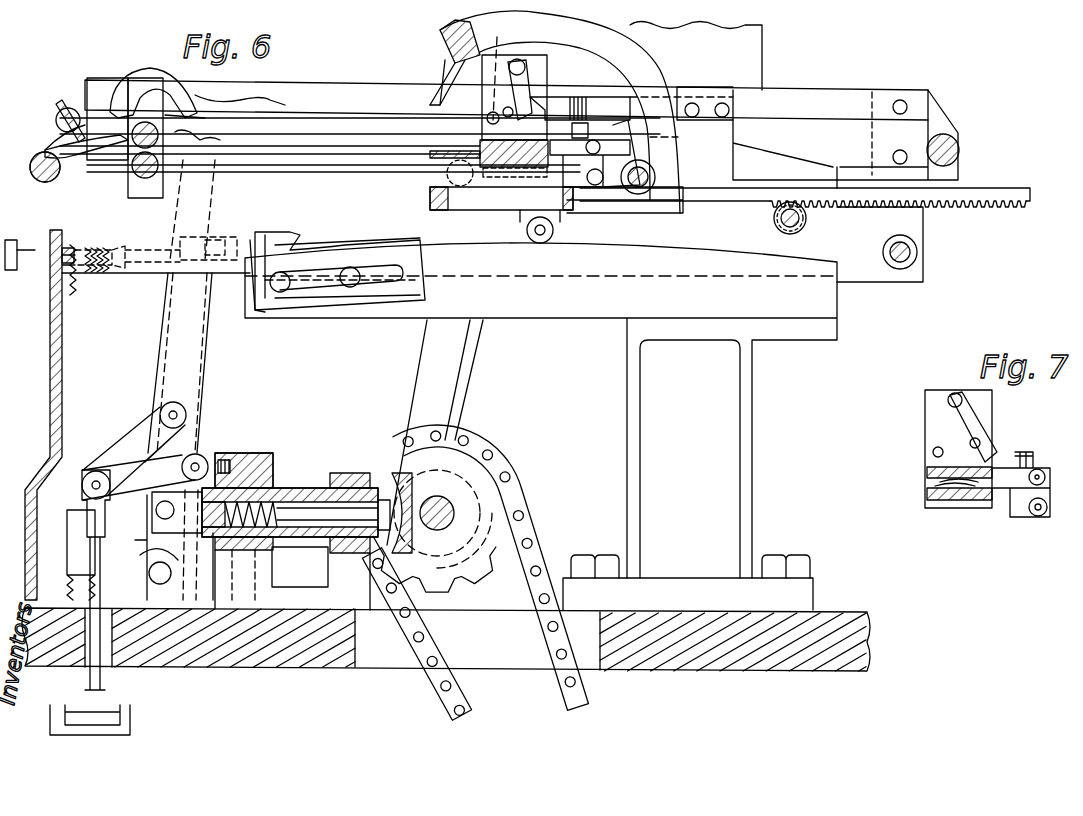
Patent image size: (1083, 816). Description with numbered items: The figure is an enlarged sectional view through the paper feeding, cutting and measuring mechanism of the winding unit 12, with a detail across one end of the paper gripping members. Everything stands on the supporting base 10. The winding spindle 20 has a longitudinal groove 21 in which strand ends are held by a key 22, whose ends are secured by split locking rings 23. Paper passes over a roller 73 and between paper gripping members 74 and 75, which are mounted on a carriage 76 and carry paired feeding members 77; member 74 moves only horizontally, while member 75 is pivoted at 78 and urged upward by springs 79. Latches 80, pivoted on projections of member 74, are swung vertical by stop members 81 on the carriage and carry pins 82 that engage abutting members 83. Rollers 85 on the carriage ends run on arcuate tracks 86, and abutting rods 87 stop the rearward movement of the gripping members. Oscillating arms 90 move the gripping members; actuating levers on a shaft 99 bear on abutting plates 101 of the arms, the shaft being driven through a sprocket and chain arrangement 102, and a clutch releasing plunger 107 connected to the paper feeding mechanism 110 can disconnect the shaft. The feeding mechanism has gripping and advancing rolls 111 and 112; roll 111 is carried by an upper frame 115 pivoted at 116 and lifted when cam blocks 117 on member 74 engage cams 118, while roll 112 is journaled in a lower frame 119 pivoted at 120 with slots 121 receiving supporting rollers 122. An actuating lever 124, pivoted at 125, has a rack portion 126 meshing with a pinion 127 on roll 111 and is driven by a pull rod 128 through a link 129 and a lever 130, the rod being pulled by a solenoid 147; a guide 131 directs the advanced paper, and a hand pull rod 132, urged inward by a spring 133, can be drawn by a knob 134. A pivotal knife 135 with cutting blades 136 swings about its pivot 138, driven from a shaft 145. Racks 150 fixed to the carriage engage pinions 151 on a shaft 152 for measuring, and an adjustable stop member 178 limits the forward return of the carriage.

In FIG. 6, the supporting base 10 is at (270, 640).
In FIG. 6, the winding unit 12 is at (405, 75).
In FIG. 6, the winding spindle 20 is at (40, 180).
In FIG. 6, the longitudinally extending groove 21 is at (130, 192).
In FIG. 6, the key 22 is at (40, 240).
In FIG. 6, the split locking rings 23 is at (45, 152).
In FIG. 6, the roller 73 is at (960, 140).
In FIG. 6, the paper gripping member 74 is at (520, 160).
In FIG. 7, the paper gripping member 74 is at (927, 497).
In FIG. 6, the paper gripping member 75 is at (478, 150).
In FIG. 7, the paper gripping member 75 is at (927, 470).
In FIG. 6, the carriage 76 is at (430, 205).
In FIG. 6, the feeding members 77 is at (428, 150).
In FIG. 6, the pivot 78 is at (600, 140).
In FIG. 7, the pivot 78 is at (1040, 470).
In FIG. 7, the springs 79 is at (965, 487).
In FIG. 6, the latches 80 is at (530, 80).
In FIG. 7, the latches 80 is at (972, 430).
In FIG. 6, the stop members 81 is at (605, 97).
In FIG. 6, the pins 82 is at (503, 112).
In FIG. 7, the pins 82 is at (980, 443).
In FIG. 6, the abutting members 83 is at (210, 105).
In FIG. 6, the rollers 85 is at (542, 243).
In FIG. 6, the arcuate shaped tracks 86 is at (614, 240).
In FIG. 6, the abutting rods 87 is at (695, 83).
In FIG. 6, the oscillating arms 90 is at (445, 375).
In FIG. 6, the shaft 99 is at (445, 505).
In FIG. 6, the abutting plates 101 is at (465, 400).
In FIG. 6, the sprocket and chain arrangement 102 is at (525, 520).
In FIG. 6, the clutch releasing plunger 107 is at (345, 473).
In FIG. 6, the paper feeding mechanism 110 is at (205, 385).
In FIG. 6, the gripping and advancing roll 111 is at (122, 90).
In FIG. 6, the gripping and advancing roll 112 is at (135, 198).
In FIG. 6, the upper frame 115 is at (318, 82).
In FIG. 6, the pivot 116 is at (902, 100).
In FIG. 6, the cam blocks 117 is at (500, 50).
In FIG. 6, the cams 118 is at (280, 95).
In FIG. 6, the lower frame 119 is at (325, 245).
In FIG. 6, the pivot 120 is at (912, 250).
In FIG. 6, the longitudinally extending slots 121 is at (266, 170).
In FIG. 6, the supporting rollers 122 is at (458, 186).
In FIG. 6, the actuating lever 124 is at (178, 347).
In FIG. 6, the pivot 125 is at (148, 568).
In FIG. 6, the rack portion 126 is at (222, 140).
In FIG. 6, the pinion 127 is at (132, 160).
In FIG. 6, the pull rod 128 is at (105, 697).
In FIG. 6, the link 129 is at (130, 450).
In FIG. 6, the lever 130 is at (185, 450).
In FIG. 6, the guide 131 is at (62, 105).
In FIG. 6, the pull rod 132 is at (118, 265).
In FIG. 6, the spring 133 is at (72, 285).
In FIG. 6, the knob or handle 134 is at (15, 275).
In FIG. 6, the pivotal knife 135 is at (600, 48).
In FIG. 6, the cutting blades 136 is at (425, 100).
In FIG. 6, the pivot 138 is at (630, 190).
In FIG. 6, the shaft 145 is at (925, 267).
In FIG. 6, the solenoid 147 is at (120, 720).
In FIG. 6, the racks 150 is at (1017, 174).
In FIG. 6, the pinions 151 is at (806, 216).
In FIG. 6, the shaft 152 is at (778, 220).
In FIG. 6, the adjustable stop member 178 is at (308, 223).